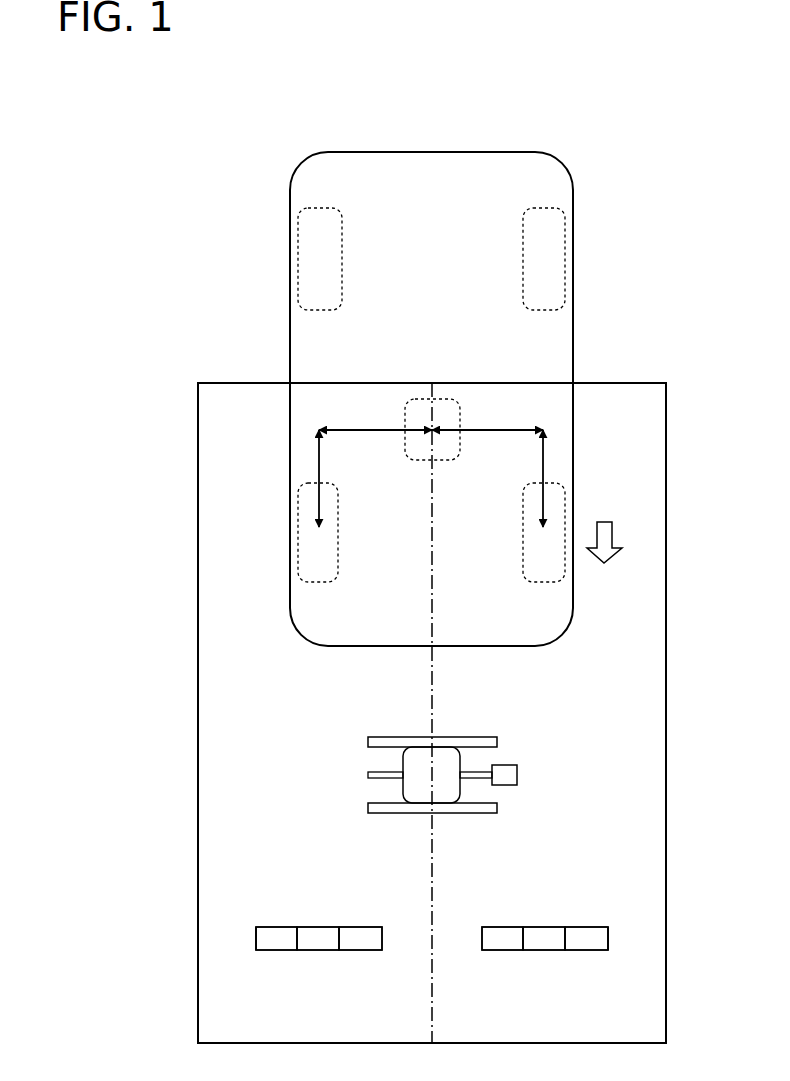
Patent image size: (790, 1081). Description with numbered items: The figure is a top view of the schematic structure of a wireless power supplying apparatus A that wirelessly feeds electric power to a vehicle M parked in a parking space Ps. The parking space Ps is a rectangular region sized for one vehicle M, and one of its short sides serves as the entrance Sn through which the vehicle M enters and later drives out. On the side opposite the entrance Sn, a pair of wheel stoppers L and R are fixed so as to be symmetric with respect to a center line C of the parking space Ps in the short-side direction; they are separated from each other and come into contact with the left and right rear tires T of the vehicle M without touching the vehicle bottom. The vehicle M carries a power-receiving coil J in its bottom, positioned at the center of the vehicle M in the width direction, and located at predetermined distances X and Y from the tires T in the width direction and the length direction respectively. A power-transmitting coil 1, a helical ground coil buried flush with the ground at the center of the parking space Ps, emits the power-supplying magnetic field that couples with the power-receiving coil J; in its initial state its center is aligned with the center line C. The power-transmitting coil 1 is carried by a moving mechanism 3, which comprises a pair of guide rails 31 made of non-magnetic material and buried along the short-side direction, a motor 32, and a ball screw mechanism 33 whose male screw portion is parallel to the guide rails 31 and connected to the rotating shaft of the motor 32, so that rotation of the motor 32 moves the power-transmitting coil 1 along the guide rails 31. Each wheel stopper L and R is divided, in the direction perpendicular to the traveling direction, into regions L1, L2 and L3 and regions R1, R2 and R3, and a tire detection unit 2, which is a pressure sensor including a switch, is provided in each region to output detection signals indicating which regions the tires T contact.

The vehicle M is at (435, 148).
The entrance Sn is at (243, 382).
The parking space Ps is at (197, 465).
The center line C is at (432, 1030).
The power-receiving coil J is at (460, 413).
The distance in the width direction X is at (376, 433).
The distance in the length direction Y is at (320, 463).
The rear tires T is at (318, 582).
The wireless power supplying apparatus A is at (552, 684).
The moving mechanism 3 is at (417, 772).
The guide rails 31 is at (473, 737).
The power-transmitting coil 1 is at (403, 763).
The ball screw mechanism 33 is at (383, 780).
The motor 32 is at (517, 777).
The tire detection unit 2 is at (320, 927).
The wheel stopper L is at (256, 938).
The wheel stopper R is at (608, 938).
The region L1 is at (280, 952).
The region L2 is at (320, 952).
The region L3 is at (363, 952).
The region R1 is at (505, 952).
The region R2 is at (547, 952).
The region R3 is at (588, 952).